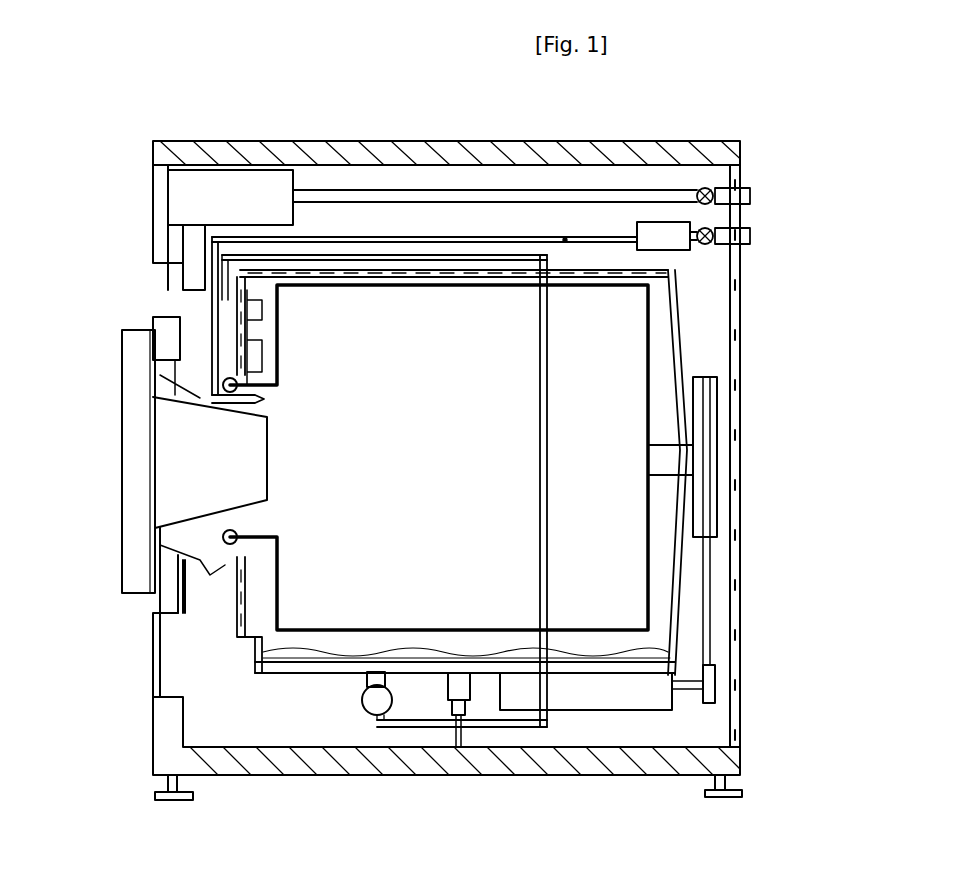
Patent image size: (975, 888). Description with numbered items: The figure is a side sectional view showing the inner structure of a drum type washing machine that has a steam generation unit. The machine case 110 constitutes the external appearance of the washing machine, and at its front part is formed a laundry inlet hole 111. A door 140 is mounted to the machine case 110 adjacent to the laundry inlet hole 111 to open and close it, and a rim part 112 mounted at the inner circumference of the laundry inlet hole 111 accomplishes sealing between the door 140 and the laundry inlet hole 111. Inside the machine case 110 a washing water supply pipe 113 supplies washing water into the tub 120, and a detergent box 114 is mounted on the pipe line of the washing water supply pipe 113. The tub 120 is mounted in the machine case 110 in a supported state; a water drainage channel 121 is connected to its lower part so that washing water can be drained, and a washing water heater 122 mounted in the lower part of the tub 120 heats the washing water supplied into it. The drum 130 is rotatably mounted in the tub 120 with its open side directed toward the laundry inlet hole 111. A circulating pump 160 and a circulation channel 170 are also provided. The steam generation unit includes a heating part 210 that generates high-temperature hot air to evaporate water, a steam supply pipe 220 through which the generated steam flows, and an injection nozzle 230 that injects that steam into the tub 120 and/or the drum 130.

The machine case 110 is at (745, 522).
The laundry inlet hole 111 is at (185, 402).
The rim part 112 is at (188, 343).
The washing water supply pipe 113 is at (443, 200).
The detergent box 114 is at (240, 190).
The tub 120 is at (678, 305).
The water drainage channel 121 is at (366, 680).
The washing water heater 122 is at (315, 660).
The drum 130 is at (652, 380).
The door 140 is at (120, 488).
The circulating pump 160 is at (380, 716).
The circulation channel 170 is at (343, 252).
The heating part 210 is at (665, 230).
The steam supply pipe 220 is at (565, 240).
The injection nozzle 230 is at (262, 400).